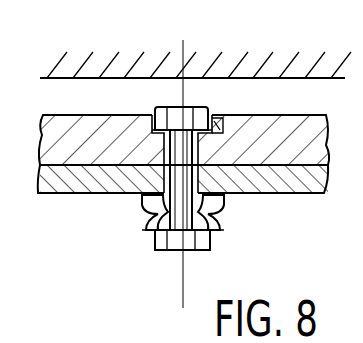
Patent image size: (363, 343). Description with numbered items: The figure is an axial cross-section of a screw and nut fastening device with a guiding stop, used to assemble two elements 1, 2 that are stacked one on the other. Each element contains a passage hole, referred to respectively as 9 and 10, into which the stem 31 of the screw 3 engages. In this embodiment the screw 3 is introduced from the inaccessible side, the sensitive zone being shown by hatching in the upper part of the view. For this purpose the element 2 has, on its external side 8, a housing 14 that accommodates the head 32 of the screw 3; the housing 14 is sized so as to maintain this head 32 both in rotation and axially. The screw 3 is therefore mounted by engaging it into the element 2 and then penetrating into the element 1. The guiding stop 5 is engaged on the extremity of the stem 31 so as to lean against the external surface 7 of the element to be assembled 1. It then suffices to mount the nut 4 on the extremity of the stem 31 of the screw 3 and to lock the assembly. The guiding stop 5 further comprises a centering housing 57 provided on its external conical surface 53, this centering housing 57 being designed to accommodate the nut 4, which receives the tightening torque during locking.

The element to be assembled 1 is at (297, 196).
The element 2 is at (92, 124).
The screw 3 is at (164, 102).
The nut 4 is at (189, 252).
The guiding stop 5 is at (143, 231).
The external surface 7 is at (258, 196).
The external side 8 is at (287, 113).
The passage hole 9 is at (135, 198).
The passage hole 10 is at (160, 146).
The housing 14 is at (216, 122).
The stem 31 is at (214, 239).
The head 32 is at (192, 107).
The external conical surface 53 is at (156, 250).
The centering housing 57 is at (147, 242).